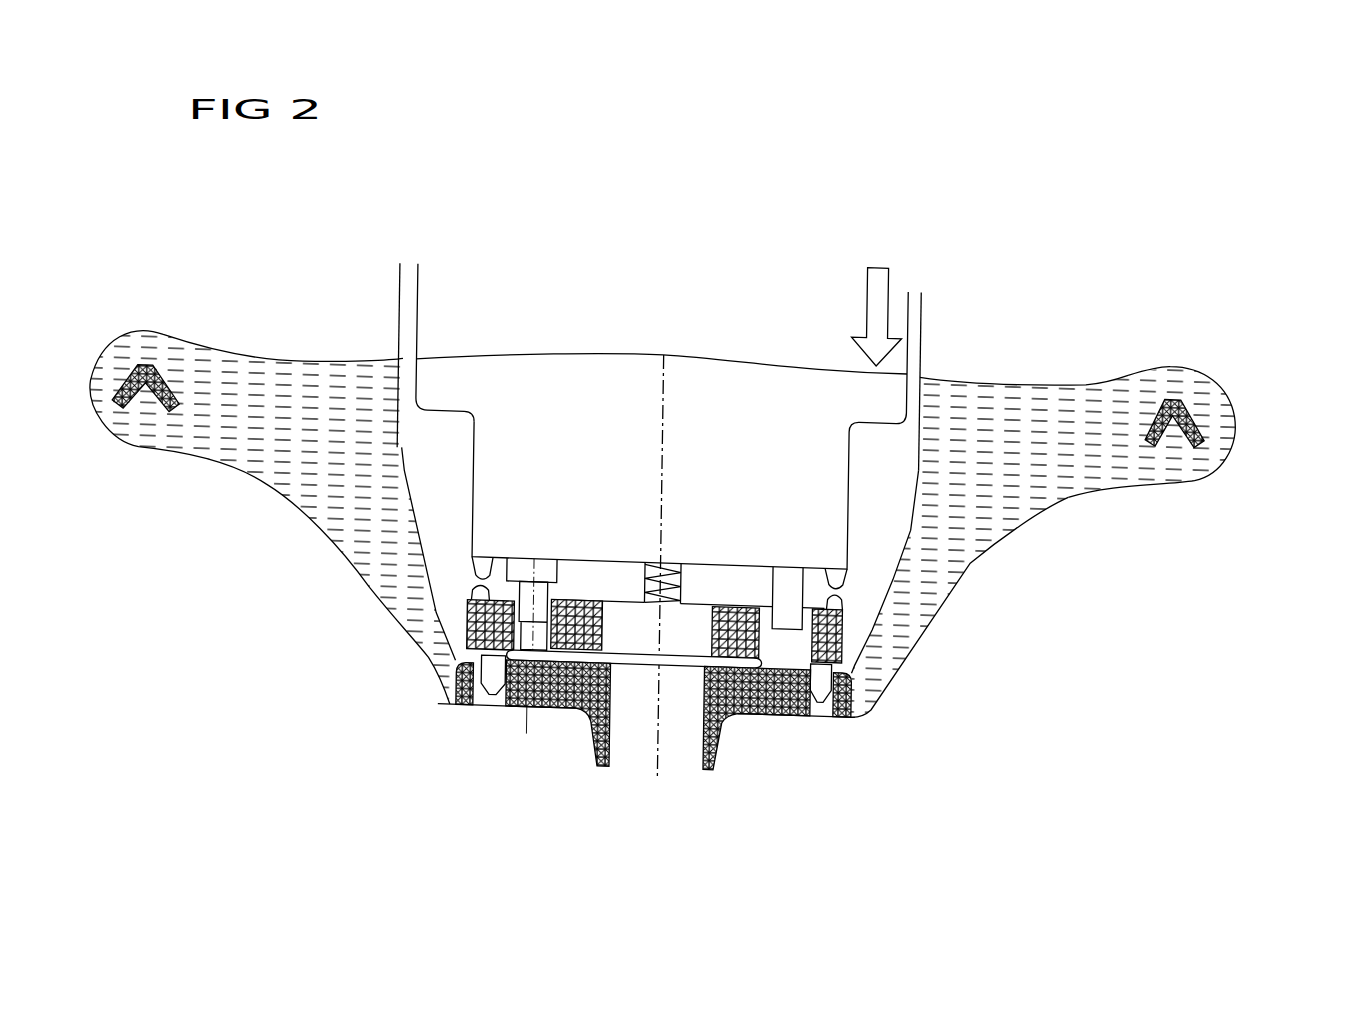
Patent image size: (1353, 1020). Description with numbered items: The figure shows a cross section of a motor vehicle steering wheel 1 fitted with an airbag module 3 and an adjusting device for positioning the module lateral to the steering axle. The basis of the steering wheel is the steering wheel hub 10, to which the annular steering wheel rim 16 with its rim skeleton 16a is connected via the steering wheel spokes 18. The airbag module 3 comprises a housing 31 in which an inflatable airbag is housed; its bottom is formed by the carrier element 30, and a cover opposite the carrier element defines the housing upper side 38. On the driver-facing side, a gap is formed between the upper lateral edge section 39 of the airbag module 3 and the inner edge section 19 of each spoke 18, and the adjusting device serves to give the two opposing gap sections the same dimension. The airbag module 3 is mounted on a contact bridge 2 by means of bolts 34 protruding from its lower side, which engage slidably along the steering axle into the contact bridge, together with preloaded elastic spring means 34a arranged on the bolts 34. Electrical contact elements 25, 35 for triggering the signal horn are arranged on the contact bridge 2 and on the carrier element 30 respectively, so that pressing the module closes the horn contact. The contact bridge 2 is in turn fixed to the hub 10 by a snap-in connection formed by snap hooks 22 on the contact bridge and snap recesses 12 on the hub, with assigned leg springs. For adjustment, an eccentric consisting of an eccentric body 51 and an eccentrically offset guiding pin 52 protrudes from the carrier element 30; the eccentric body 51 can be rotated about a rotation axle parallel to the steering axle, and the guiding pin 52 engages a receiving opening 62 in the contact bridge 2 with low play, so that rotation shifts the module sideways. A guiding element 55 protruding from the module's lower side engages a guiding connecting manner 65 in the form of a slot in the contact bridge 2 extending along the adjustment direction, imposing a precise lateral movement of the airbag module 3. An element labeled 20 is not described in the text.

The motor vehicle steering wheel 1 is at (1227, 361).
The contact bridge 2 is at (469, 629).
The airbag module 3 is at (654, 346).
The steering wheel hub 10 is at (742, 690).
The snap recesses 12 is at (504, 695).
The steering wheel rim 16 is at (1231, 401).
The rim skeleton 16a is at (1175, 379).
The steering wheel spokes 18 is at (990, 365).
The inner edge section 19 is at (397, 383).
The carrier plate 20 is at (591, 612).
The snap hooks 22 is at (494, 679).
The electrical contact element 25 is at (470, 597).
The carrier element 30 is at (720, 553).
The housing 31 is at (428, 461).
The bolts 34 is at (677, 557).
The elastic spring means 34a is at (681, 582).
The electrical contact element 35 is at (477, 566).
The housing upper side 38 is at (710, 348).
The upper lateral edge section 39 is at (415, 383).
The eccentric body 51 is at (518, 563).
The guiding pin 52 is at (540, 587).
The guiding element 55 is at (788, 566).
The receiving opening 62 is at (541, 639).
The guiding connecting manner 65 is at (791, 641).